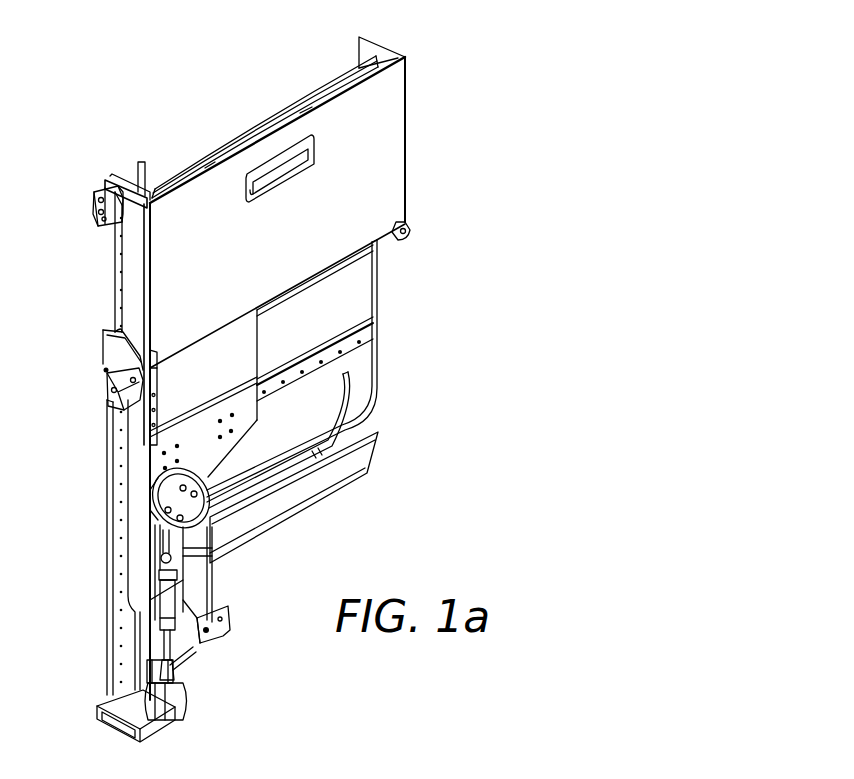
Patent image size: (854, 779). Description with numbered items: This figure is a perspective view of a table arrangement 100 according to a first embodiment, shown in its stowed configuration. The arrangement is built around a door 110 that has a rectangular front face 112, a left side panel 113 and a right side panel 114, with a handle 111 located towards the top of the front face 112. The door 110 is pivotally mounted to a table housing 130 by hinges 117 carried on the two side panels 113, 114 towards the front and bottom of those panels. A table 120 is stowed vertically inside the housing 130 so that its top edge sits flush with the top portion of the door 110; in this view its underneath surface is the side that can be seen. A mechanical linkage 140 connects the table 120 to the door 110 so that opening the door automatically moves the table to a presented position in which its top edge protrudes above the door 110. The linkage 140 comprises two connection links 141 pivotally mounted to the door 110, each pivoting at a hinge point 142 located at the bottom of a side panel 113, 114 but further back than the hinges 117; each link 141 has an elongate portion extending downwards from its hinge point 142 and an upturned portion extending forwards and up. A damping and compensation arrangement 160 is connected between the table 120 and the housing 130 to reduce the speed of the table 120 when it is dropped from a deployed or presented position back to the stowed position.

The table arrangement 100 is at (426, 81).
The door 110 is at (403, 150).
The handle 111 is at (281, 183).
The rectangular front face 112 is at (227, 274).
The left side panel 113 is at (130, 268).
The right side panel 114 is at (404, 191).
The hinges 117 is at (149, 378).
The table 120 is at (360, 357).
The table housing 130 is at (139, 168).
The mechanical linkage 140 is at (99, 669).
The connection links 141 is at (117, 563).
The hinge points 142 is at (103, 368).
The damping and compensation arrangement 160 is at (213, 654).